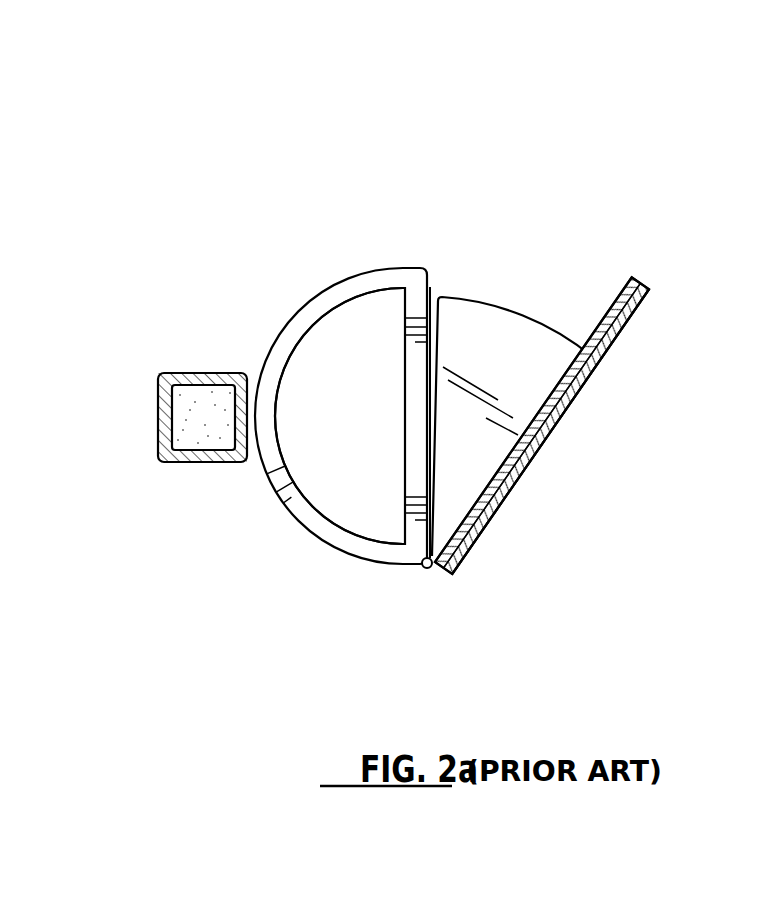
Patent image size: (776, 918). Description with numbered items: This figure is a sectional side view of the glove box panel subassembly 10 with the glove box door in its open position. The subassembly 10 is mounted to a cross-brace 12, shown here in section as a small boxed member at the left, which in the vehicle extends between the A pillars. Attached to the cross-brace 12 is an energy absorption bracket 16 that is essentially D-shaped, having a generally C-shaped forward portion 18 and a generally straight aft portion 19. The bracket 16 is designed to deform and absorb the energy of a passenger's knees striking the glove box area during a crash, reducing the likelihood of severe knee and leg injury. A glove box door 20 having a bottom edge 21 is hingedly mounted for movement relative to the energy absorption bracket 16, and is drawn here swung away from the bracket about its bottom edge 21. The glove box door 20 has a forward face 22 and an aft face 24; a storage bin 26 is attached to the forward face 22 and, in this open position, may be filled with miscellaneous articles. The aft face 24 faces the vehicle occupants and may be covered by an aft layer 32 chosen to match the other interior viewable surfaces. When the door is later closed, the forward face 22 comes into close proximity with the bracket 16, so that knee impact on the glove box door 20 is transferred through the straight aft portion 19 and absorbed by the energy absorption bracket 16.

The glove box panel subassembly 10 is at (403, 148).
The cross-brace 12 is at (192, 372).
The energy absorption bracket 16 is at (331, 287).
The forward portion 18 is at (274, 341).
The aft portion 19 is at (432, 285).
The glove box door 20 is at (637, 315).
The bottom edge 21 is at (432, 570).
The forward face 22 is at (611, 301).
The aft face 24 is at (599, 364).
The storage bin 26 is at (500, 300).
The aft layer 32 is at (490, 521).